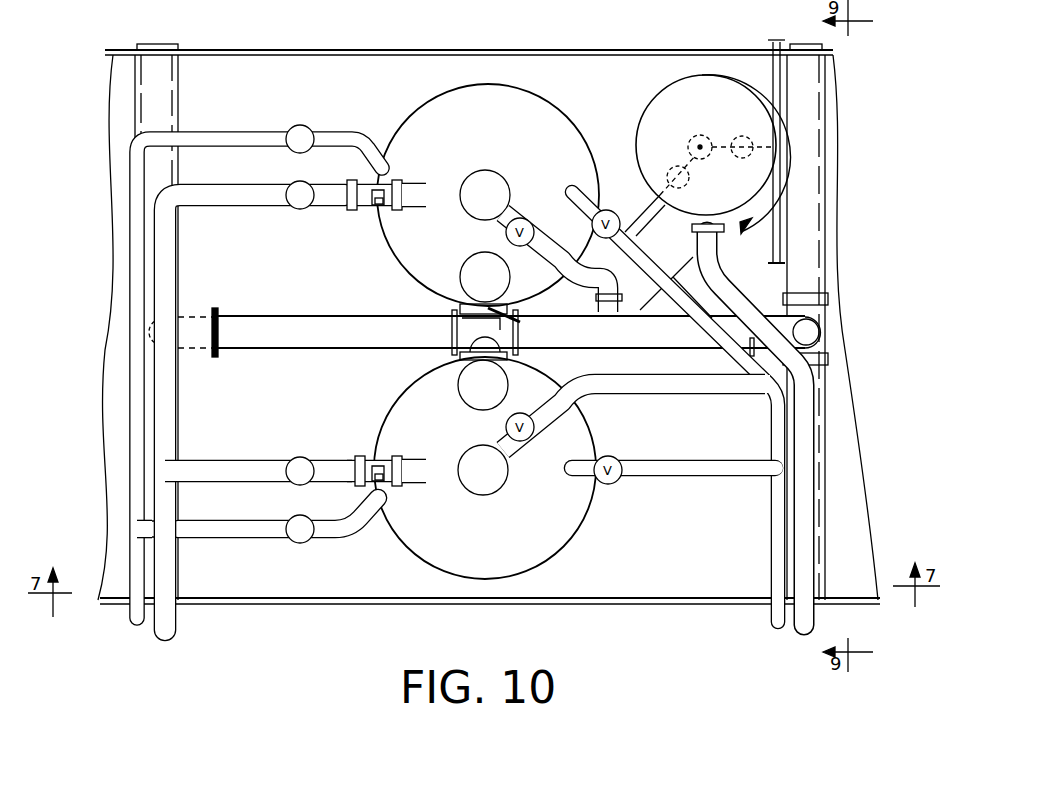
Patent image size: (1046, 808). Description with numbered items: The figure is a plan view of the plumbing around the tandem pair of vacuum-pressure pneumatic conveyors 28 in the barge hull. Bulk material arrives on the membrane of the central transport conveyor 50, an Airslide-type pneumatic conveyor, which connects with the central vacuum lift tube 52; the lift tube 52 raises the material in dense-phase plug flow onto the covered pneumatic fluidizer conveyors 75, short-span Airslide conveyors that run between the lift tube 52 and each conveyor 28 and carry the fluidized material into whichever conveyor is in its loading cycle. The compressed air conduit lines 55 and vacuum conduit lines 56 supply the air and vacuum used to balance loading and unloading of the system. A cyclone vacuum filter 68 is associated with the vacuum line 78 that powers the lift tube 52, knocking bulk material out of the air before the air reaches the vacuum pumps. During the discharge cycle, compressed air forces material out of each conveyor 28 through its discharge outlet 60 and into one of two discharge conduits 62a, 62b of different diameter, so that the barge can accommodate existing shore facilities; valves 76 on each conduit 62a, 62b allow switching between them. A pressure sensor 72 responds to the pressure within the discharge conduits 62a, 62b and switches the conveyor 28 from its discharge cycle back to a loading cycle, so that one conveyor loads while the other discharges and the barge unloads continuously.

The vacuum-pressure pneumatic conveyor 28 is at (550, 100).
The central transport conveyor 50 is at (178, 90).
The central vacuum lift tube 52 is at (150, 332).
The compressed air conduit line 55 is at (740, 372).
The vacuum conduit line 56 is at (747, 290).
The discharge outlet 60 is at (418, 180).
The discharge conduit 62a is at (237, 458).
The discharge conduit 62b is at (227, 131).
The cyclone vacuum filter 68 is at (653, 105).
The pressure sensor 72 is at (382, 204).
The covered pneumatic fluidizer conveyor 75 is at (288, 315).
The valve 76 is at (312, 125).
The vacuum line 78 is at (548, 243).